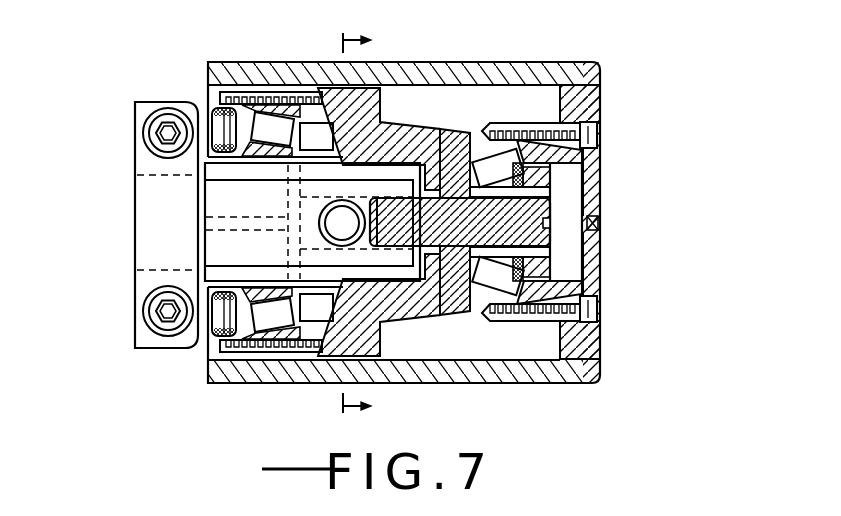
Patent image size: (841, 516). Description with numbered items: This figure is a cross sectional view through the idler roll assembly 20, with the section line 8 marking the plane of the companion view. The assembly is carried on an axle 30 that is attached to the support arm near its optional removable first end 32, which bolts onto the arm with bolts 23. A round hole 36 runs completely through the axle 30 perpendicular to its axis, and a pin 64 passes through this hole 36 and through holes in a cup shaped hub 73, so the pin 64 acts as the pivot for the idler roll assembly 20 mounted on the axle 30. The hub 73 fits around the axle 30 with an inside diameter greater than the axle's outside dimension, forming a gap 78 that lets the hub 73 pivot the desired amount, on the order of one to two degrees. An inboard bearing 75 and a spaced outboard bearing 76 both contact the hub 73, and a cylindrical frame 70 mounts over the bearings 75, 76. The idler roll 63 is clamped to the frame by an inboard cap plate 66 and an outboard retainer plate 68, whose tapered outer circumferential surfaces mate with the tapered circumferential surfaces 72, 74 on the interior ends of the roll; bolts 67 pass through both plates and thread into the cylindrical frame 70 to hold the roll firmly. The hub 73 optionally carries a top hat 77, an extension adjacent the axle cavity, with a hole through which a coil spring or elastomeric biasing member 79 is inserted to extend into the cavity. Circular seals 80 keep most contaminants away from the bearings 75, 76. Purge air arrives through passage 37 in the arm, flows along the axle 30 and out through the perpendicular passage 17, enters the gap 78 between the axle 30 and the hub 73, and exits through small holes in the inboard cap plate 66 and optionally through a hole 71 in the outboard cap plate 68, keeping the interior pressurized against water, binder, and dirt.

The perpendicular passage 17 is at (290, 257).
The idler roll assembly 20 is at (530, 54).
The bolts 23 is at (143, 128).
The axle 30 is at (227, 192).
The first end 32 is at (135, 102).
The hole 36 is at (343, 215).
The passage 37 is at (235, 222).
The idler roll 63 is at (288, 80).
The pin 64 is at (372, 202).
The inboard cap plate 66 is at (220, 88).
The bolts 67 is at (588, 133).
The outboard retainer plate 68 is at (583, 97).
The cylindrical frame 70 is at (438, 125).
The hole 71 is at (597, 224).
The tapered circumferential surface 72 is at (226, 95).
The cup shaped hub 73 is at (470, 125).
The tapered circumferential surface 74 is at (583, 63).
The inboard bearing 75 is at (272, 358).
The outboard bearing 76 is at (552, 72).
The top hat 77 is at (537, 253).
The gap 78 is at (248, 172).
The biasing member 79 is at (429, 235).
The circular seals 80 is at (213, 118).
The section line 8- 8 is at (347, 227).